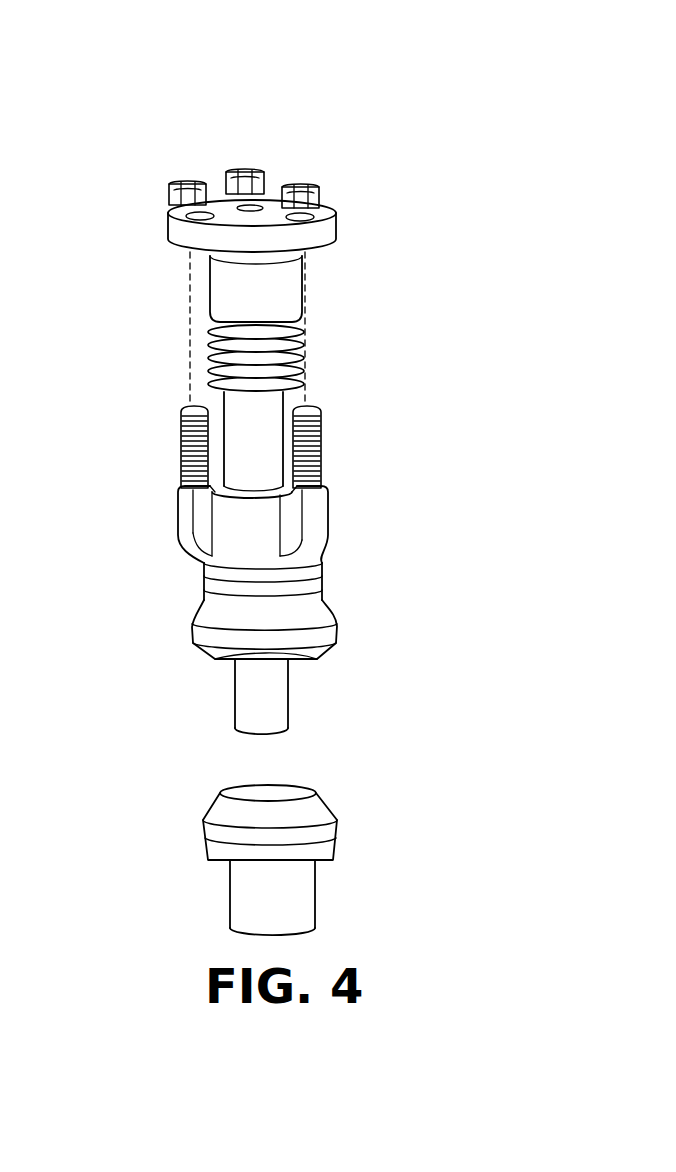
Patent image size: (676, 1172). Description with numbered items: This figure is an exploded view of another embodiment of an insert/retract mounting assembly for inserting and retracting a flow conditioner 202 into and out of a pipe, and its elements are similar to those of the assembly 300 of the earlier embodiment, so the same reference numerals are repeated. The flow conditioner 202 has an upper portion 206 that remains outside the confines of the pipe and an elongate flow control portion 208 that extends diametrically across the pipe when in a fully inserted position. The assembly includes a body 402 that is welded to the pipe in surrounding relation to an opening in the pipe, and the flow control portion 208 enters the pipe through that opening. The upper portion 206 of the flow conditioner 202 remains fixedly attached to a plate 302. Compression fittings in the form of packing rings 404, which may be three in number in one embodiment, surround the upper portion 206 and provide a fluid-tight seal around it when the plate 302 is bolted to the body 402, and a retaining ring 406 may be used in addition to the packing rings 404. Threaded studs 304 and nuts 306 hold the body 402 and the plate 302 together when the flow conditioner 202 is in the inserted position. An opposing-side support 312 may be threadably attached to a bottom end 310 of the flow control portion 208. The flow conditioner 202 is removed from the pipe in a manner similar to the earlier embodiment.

The insert/retract mounting assembly 300 is at (425, 88).
The plate 302 is at (322, 232).
The nuts 306 is at (167, 195).
The upper portion 206 is at (277, 258).
The packing rings 404 is at (215, 360).
The retaining ring 406 is at (300, 400).
The threaded studs 304 is at (182, 452).
The body 402 is at (318, 572).
The flow conditioner 202 is at (289, 680).
The elongate flow control portion 208 is at (271, 702).
The bottom end 310 is at (268, 734).
The opposing-side support 312 is at (218, 862).